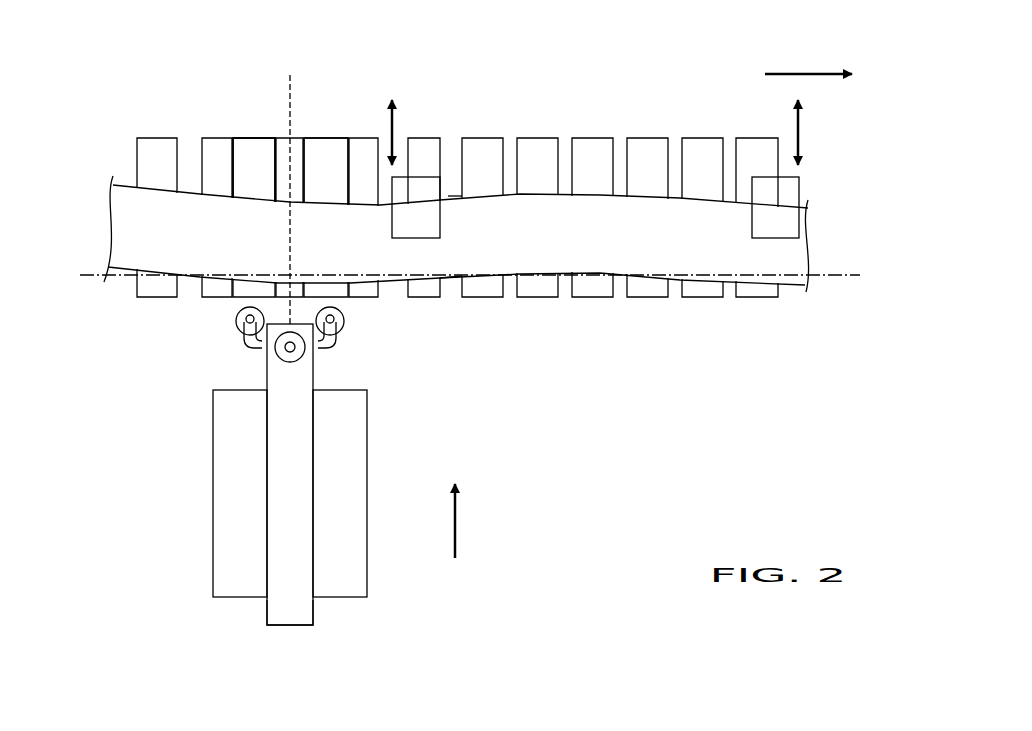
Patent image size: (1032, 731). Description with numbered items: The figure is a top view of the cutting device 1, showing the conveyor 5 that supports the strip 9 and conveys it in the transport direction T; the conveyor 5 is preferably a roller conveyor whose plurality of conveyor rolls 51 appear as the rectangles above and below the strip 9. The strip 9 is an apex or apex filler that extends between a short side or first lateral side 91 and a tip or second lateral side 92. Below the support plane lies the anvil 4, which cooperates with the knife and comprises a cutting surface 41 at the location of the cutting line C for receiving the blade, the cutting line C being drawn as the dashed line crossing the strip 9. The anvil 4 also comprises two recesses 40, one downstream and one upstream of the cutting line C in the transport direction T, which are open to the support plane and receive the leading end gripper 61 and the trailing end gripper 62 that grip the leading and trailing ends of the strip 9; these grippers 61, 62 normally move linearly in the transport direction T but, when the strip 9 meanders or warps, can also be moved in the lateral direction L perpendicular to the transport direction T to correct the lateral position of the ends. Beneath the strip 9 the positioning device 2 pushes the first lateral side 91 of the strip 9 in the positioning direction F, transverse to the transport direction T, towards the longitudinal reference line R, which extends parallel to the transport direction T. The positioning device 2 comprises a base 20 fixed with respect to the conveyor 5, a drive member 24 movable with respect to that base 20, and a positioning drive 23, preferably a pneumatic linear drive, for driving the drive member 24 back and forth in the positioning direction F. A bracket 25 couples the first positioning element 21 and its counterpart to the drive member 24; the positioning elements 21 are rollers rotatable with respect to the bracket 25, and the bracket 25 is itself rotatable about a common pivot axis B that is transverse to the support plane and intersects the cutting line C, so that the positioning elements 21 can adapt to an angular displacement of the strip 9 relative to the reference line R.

The cutting device 1 is at (602, 414).
The positioning device 2 is at (295, 475).
The anvil 4 is at (243, 150).
The conveyor 5 is at (600, 290).
The strip 9 is at (595, 210).
The base 20 is at (345, 588).
The first positioning element 21 is at (237, 326).
The positioning drive 23 is at (228, 493).
The drive member 24 is at (287, 603).
The bracket 25 is at (325, 350).
The recesses 40 is at (243, 150).
The cutting surface 41 is at (262, 150).
The conveyor rolls 51 is at (585, 167).
The leading end gripper 61 is at (782, 225).
The trailing end gripper 62 is at (422, 222).
The first lateral side 91 is at (450, 283).
The second lateral side 92 is at (453, 198).
The pivot axis B is at (262, 347).
The cutting line C is at (292, 95).
The positioning direction F is at (467, 521).
The lateral direction L is at (394, 135).
The reference line R is at (828, 278).
The transport direction T is at (808, 58).